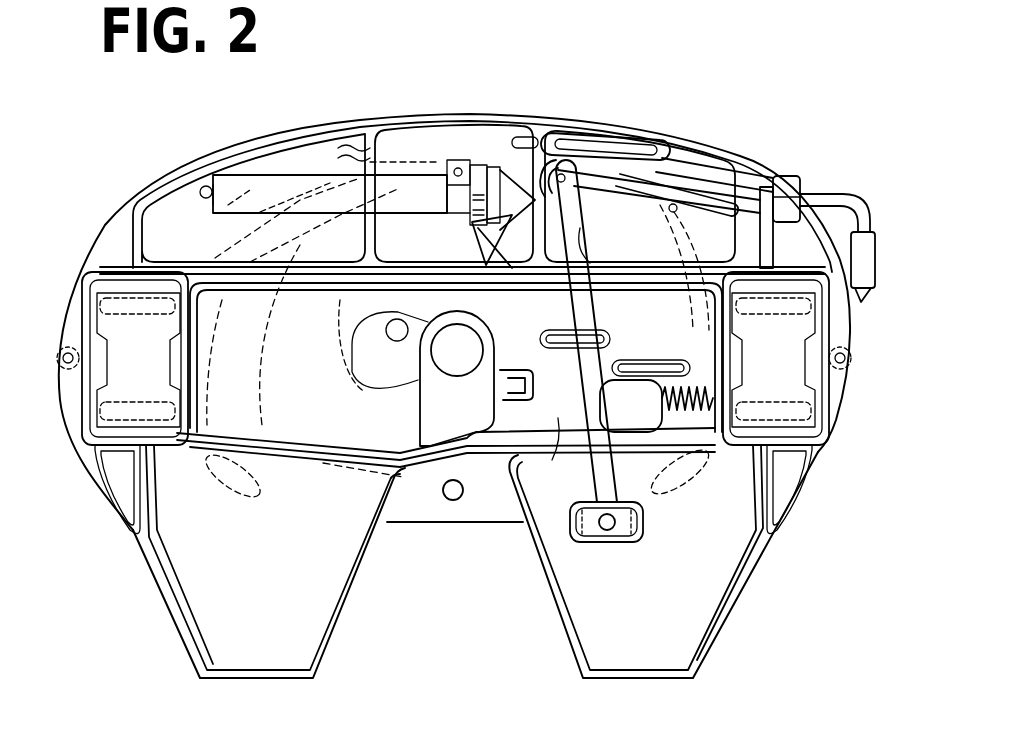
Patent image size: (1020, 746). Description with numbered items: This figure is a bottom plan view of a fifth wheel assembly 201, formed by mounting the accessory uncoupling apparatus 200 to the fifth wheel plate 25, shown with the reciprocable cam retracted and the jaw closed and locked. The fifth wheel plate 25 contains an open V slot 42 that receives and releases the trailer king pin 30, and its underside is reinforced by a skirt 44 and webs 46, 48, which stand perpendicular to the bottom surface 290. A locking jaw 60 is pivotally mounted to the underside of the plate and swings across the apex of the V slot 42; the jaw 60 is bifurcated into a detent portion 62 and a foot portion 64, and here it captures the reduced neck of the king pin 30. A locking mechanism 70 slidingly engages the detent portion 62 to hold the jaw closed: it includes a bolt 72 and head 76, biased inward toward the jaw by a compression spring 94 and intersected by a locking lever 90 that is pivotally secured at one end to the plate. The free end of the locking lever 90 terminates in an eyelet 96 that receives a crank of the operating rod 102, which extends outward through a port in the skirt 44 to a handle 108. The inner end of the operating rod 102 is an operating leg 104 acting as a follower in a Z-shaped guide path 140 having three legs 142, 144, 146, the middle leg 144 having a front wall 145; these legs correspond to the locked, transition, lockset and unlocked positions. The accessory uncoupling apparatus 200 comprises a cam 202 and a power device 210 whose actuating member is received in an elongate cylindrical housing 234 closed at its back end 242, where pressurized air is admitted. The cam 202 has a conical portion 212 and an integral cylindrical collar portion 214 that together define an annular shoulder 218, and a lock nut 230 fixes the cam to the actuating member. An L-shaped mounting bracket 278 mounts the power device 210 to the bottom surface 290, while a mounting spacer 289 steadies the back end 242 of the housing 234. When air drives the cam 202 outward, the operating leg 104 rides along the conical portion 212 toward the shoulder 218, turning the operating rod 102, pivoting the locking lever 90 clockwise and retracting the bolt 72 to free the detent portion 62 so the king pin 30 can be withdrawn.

The fifth wheel plate 25 is at (246, 138).
The skirt 44 is at (330, 136).
The fifth wheel assembly 201 is at (84, 266).
The web 48 is at (353, 152).
The bottom surface 290 is at (318, 377).
The web 46 is at (332, 292).
The V slot 42 is at (407, 620).
The accessory uncoupling apparatus 200 is at (229, 226).
The mounting spacer 289 is at (204, 198).
The back end 242 is at (212, 221).
The housing 234 is at (240, 190).
The power device 210 is at (345, 203).
The lock nut 230 is at (468, 184).
The mounting bracket 278 is at (446, 168).
The conical portion 212 is at (478, 200).
The cylindrical collar portion 214 is at (478, 163).
The annular shoulder 218 is at (490, 167).
The cam 202 is at (517, 198).
The foot portion 64 is at (462, 263).
The first leg 142 is at (556, 160).
The front wall 145 is at (612, 160).
The leg 144 is at (690, 168).
The guide path 140 is at (627, 148).
The last leg 146 is at (684, 174).
The handle 108 is at (851, 298).
The eyelet 96 is at (571, 186).
The operating rod 102 is at (636, 196).
The operating leg 104 is at (585, 258).
The locking jaw 60 is at (418, 388).
The king pin 30 is at (466, 352).
The detent portion 62 is at (561, 446).
The bolt 72 is at (646, 418).
The compression spring 94 is at (694, 378).
The head 76 is at (493, 478).
The locking mechanism 70 is at (540, 450).
The locking lever 90 is at (597, 483).